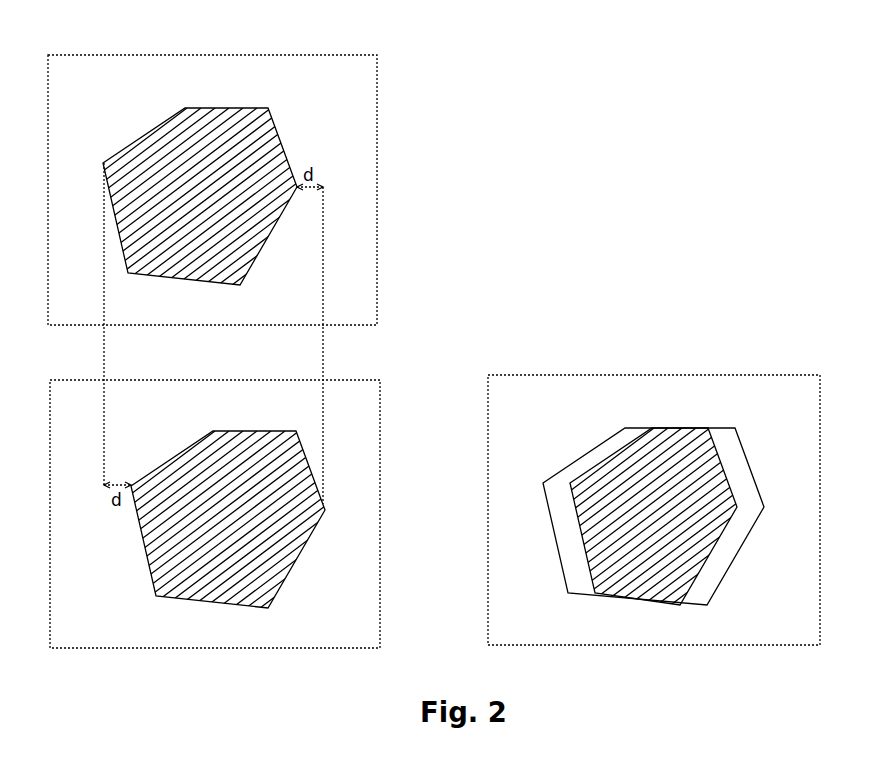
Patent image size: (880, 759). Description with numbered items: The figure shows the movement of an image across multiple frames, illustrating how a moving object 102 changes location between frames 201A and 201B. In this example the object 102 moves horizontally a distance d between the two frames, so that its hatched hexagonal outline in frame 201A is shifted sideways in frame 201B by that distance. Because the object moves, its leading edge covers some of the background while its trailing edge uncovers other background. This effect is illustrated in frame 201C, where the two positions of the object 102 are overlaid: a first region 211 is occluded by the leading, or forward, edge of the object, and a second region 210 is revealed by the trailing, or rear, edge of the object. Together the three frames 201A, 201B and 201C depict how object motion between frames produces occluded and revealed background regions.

The moving object 102 is at (133, 142).
The frame 201A is at (240, 84).
The frame 201B is at (240, 414).
The frame 201C is at (680, 408).
The second region 210 is at (585, 452).
The first region 211 is at (750, 460).